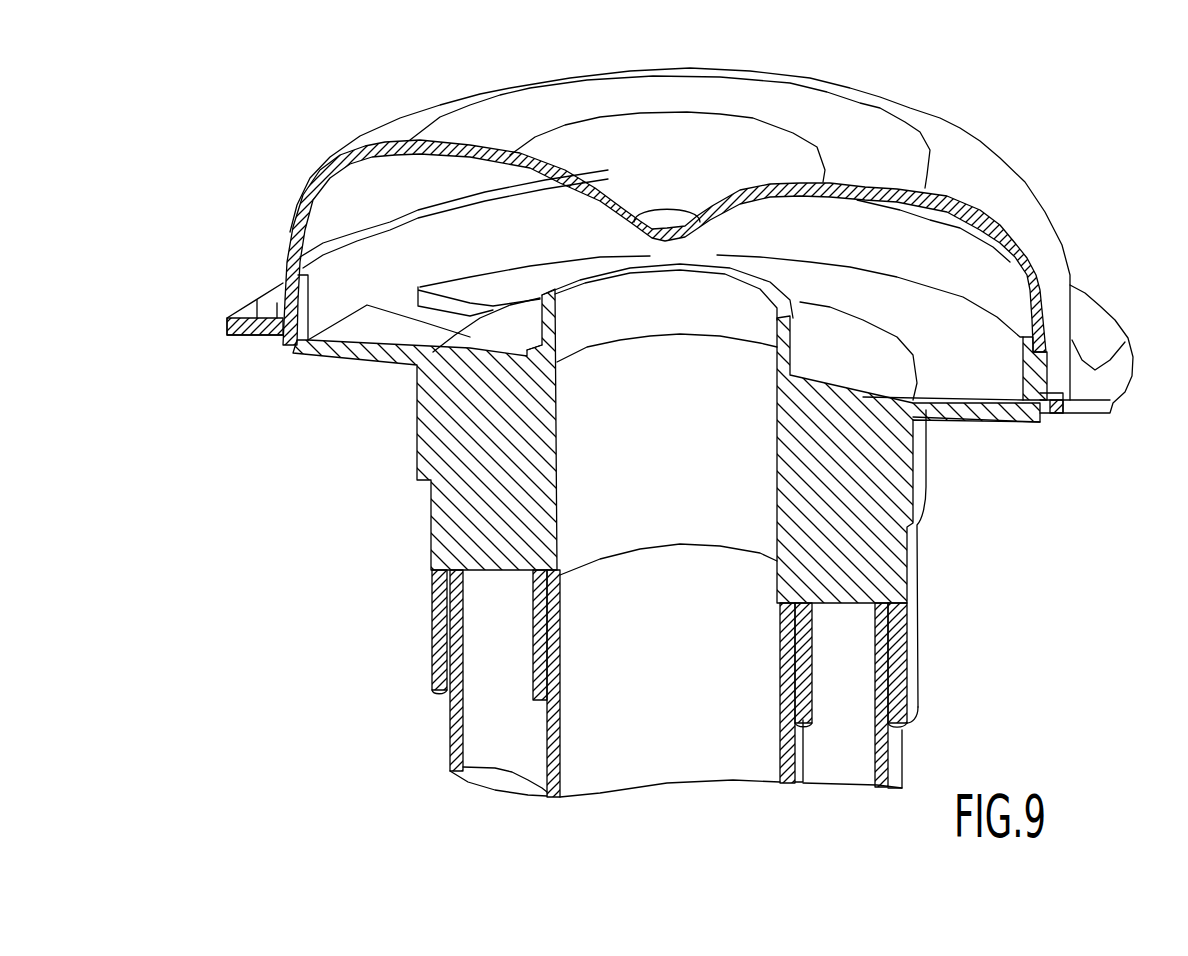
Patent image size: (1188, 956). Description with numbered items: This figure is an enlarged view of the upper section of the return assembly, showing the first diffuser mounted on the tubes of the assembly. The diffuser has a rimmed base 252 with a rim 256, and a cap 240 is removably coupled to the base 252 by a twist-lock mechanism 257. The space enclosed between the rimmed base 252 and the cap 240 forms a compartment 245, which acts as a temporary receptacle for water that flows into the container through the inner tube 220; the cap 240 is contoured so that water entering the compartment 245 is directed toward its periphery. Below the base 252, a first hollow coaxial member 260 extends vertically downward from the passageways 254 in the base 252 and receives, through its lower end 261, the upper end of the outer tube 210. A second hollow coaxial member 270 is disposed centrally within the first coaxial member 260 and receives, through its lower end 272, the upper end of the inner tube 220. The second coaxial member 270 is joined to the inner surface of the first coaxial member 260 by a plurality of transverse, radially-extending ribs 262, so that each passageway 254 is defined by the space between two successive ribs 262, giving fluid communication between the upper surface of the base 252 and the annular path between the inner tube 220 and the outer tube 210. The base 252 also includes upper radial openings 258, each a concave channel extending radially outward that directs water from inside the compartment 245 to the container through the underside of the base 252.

The outer tube 210 is at (910, 781).
The inner tube 220 is at (449, 769).
The cap 240 is at (935, 130).
The compartment 245 is at (468, 218).
The rimmed base 252 is at (997, 390).
The passageway 254 is at (858, 338).
The rim 256 is at (320, 303).
The twist-lock mechanism 257 is at (1080, 373).
The upper radial opening 258 is at (415, 312).
The first hollow coaxial member 260 is at (917, 582).
The lower end of the first coaxial member 261 is at (913, 723).
The rib 262 is at (433, 390).
The second hollow coaxial member 270 is at (780, 347).
The lower end of the second coaxial member 272 is at (553, 707).